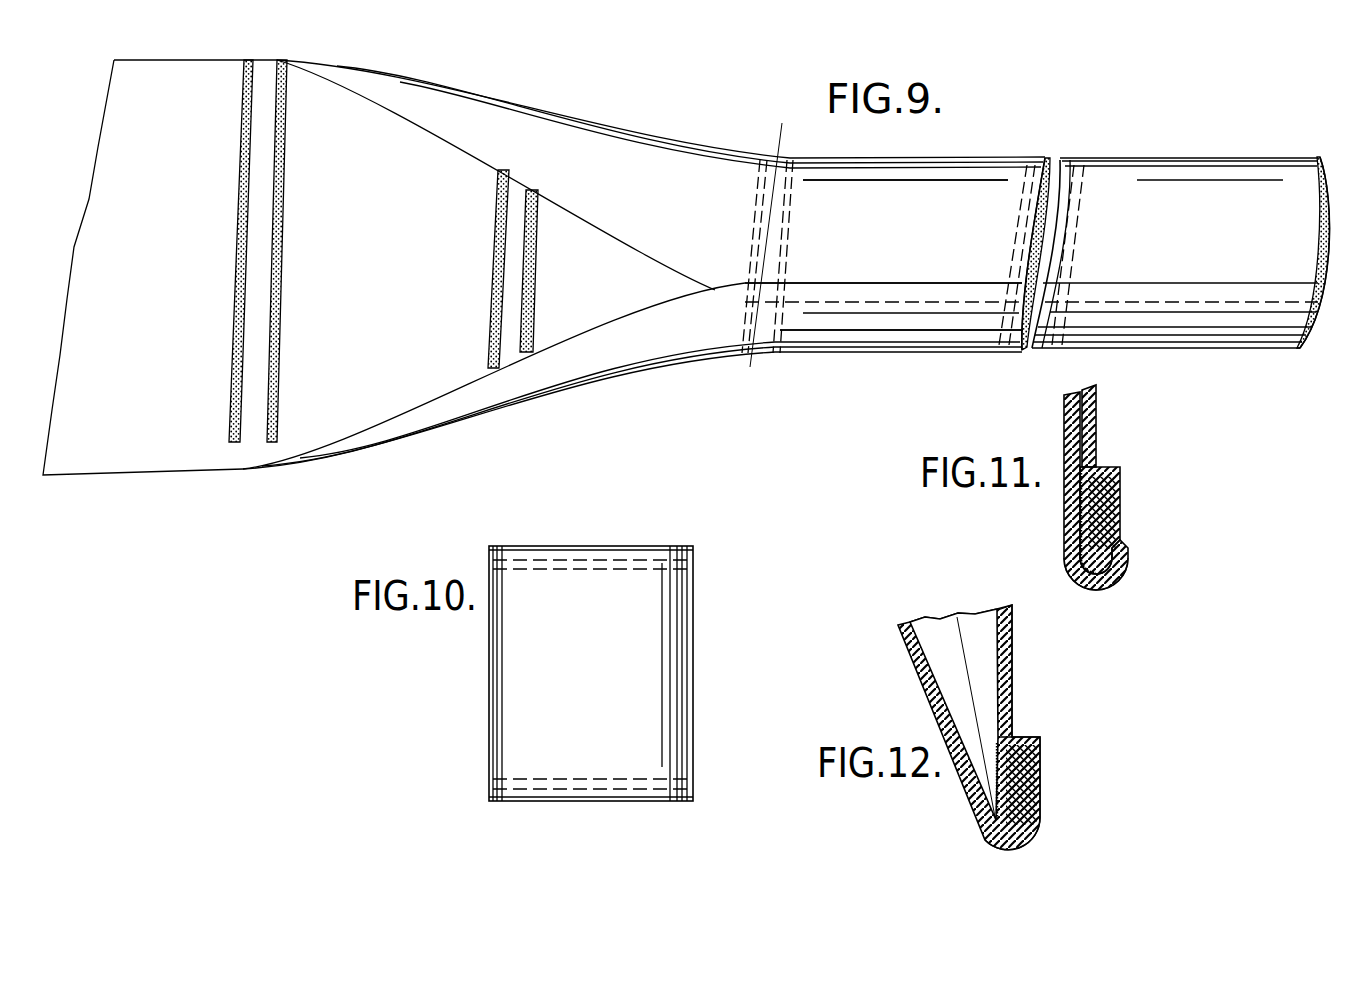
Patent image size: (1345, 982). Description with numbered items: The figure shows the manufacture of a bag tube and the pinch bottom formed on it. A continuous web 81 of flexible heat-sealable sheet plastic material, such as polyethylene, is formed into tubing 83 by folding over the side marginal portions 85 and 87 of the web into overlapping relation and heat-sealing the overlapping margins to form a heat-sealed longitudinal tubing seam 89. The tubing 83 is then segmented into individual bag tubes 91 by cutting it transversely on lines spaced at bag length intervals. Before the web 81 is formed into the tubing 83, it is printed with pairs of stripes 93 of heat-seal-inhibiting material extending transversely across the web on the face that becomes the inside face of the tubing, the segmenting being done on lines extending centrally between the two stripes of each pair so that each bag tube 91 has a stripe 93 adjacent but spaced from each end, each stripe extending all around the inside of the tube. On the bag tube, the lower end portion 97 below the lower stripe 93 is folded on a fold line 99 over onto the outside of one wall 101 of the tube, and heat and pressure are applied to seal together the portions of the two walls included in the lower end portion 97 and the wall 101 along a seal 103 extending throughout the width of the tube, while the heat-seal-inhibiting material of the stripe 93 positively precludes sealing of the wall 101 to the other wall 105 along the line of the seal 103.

In FIG. 9, the web 81 is at (112, 482).
In FIG. 9, the tubing 83 is at (990, 148).
In FIG. 9, the side marginal portion 85 is at (893, 333).
In FIG. 9, the side marginal portion 87 is at (897, 193).
In FIG. 9, the longitudinal tubing seam 89 is at (890, 292).
In FIG. 9, the bag tube 91 is at (1225, 152).
In FIG. 10, the bag tube 91 is at (482, 667).
In FIG. 9, the stripe 93 is at (236, 258).
In FIG. 10, the stripe 93 is at (598, 560).
In FIG. 11, the stripe 93 is at (1116, 478).
In FIG. 12, the stripe 93 is at (997, 805).
In FIG. 10, the lower end portion 97 is at (583, 802).
In FIG. 11, the lower end portion 97 is at (1108, 467).
In FIG. 12, the lower end portion 97 is at (1027, 737).
In FIG. 11, the fold line 99 is at (1100, 592).
In FIG. 12, the fold line 99 is at (1017, 858).
In FIG. 10, the wall 101 is at (600, 684).
In FIG. 11, the wall 101 is at (1090, 410).
In FIG. 12, the wall 101 is at (1012, 658).
In FIG. 11, the seal 103 is at (1118, 522).
In FIG. 12, the seal 103 is at (1037, 790).
In FIG. 11, the other wall 105 is at (1068, 405).
In FIG. 12, the other wall 105 is at (905, 655).